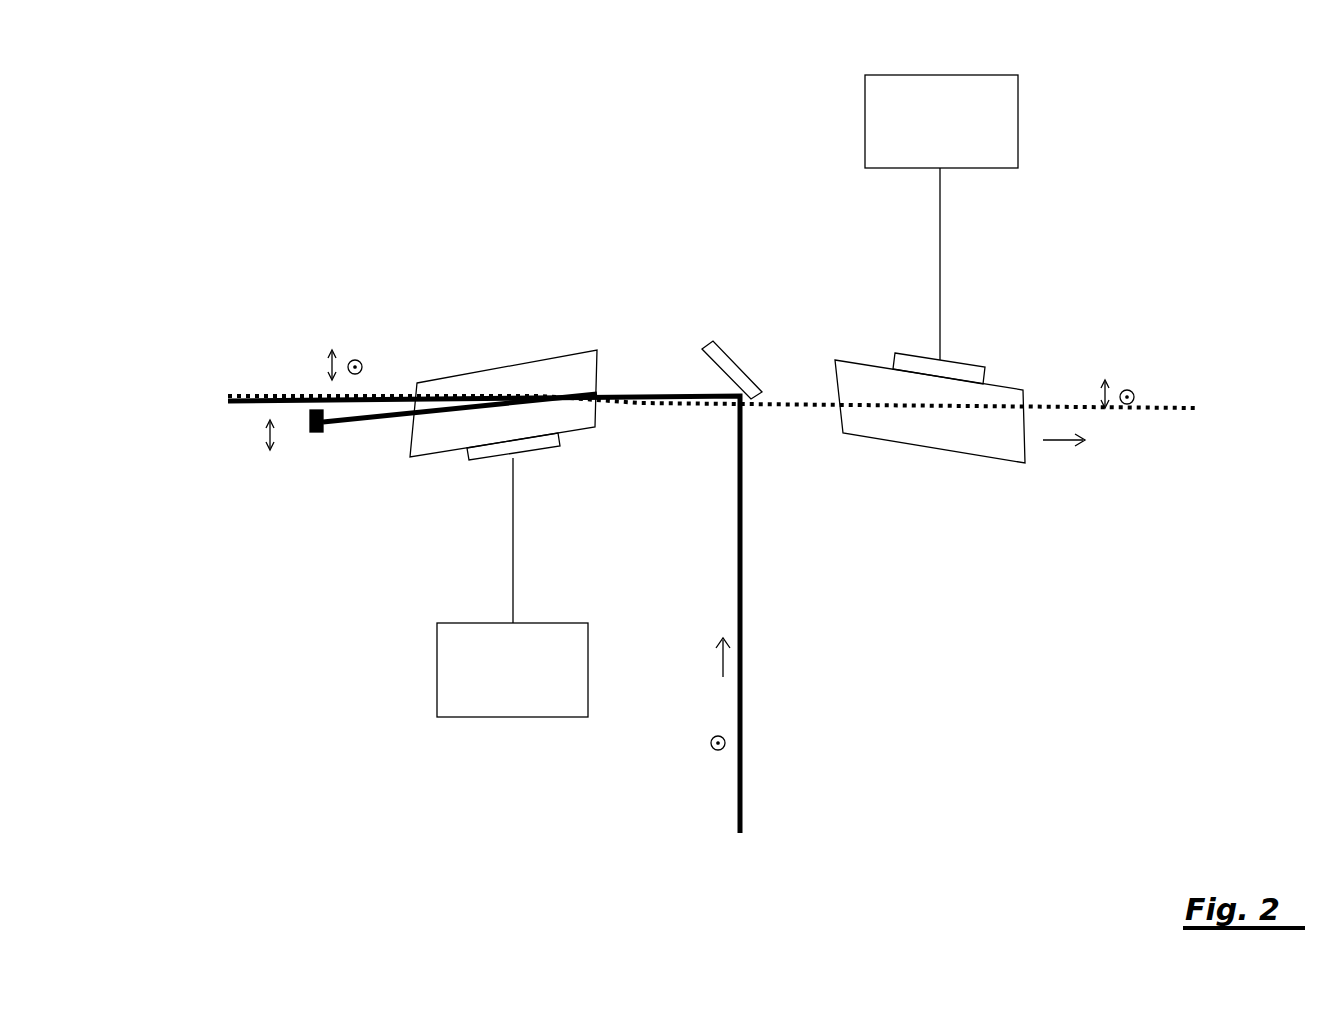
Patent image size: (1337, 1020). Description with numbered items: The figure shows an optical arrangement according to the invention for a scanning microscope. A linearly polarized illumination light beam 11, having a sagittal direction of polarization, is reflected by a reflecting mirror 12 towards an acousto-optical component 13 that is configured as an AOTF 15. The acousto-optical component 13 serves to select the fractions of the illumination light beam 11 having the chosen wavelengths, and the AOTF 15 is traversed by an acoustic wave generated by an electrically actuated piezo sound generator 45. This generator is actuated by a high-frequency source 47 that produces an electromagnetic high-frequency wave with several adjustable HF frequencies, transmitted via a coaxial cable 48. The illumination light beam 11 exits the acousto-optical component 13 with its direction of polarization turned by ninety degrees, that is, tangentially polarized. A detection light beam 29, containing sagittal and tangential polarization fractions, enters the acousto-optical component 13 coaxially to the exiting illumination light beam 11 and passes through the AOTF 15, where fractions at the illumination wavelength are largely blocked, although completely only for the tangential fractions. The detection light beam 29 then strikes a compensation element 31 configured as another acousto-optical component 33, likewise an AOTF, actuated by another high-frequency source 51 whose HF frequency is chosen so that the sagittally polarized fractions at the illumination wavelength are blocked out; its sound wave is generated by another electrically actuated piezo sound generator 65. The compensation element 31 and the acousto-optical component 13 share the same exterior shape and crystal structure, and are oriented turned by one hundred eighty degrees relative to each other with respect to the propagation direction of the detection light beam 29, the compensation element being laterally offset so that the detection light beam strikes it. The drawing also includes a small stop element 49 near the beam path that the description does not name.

The illumination light beam 11 is at (235, 406).
The reflecting mirror 12 is at (712, 348).
The acousto-optical component 13 is at (464, 310).
The AOTF 15 is at (545, 368).
The detection light beam 29 is at (260, 392).
The compensation element 31 is at (923, 478).
The other acousto-optical component 33 is at (983, 445).
The piezo sound generator 45 is at (477, 455).
The high-frequency source 47 is at (452, 700).
The coaxial cable 48 is at (513, 530).
The stop 49 is at (307, 428).
The other high-frequency source 51 is at (970, 120).
The piezo sound generator 65 is at (960, 360).